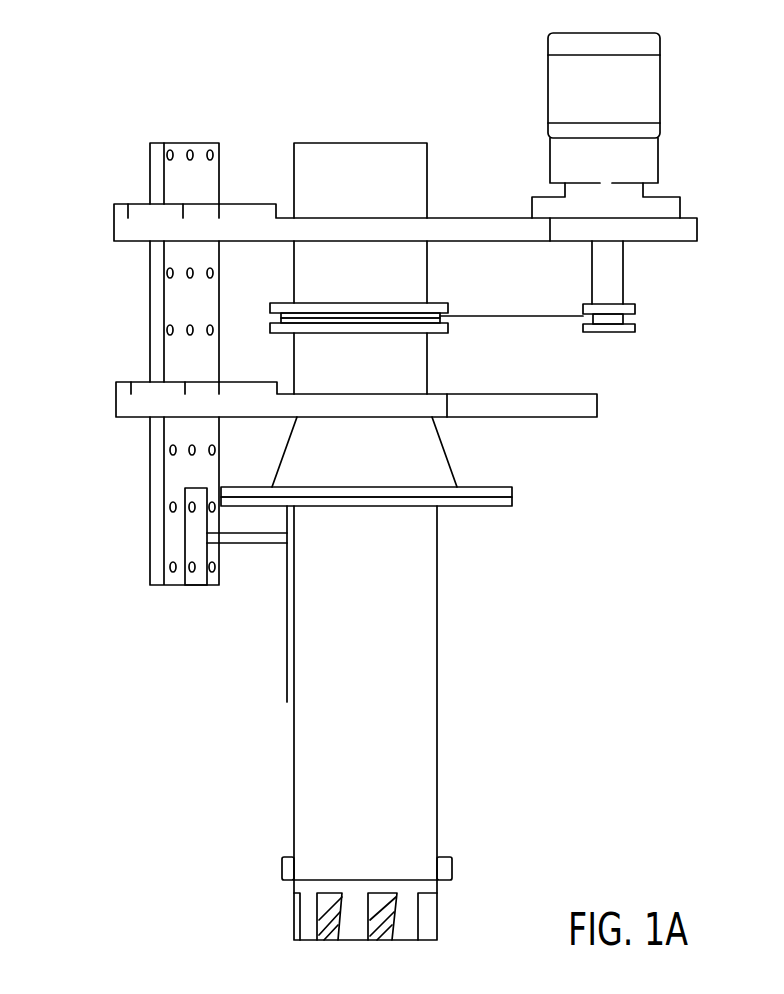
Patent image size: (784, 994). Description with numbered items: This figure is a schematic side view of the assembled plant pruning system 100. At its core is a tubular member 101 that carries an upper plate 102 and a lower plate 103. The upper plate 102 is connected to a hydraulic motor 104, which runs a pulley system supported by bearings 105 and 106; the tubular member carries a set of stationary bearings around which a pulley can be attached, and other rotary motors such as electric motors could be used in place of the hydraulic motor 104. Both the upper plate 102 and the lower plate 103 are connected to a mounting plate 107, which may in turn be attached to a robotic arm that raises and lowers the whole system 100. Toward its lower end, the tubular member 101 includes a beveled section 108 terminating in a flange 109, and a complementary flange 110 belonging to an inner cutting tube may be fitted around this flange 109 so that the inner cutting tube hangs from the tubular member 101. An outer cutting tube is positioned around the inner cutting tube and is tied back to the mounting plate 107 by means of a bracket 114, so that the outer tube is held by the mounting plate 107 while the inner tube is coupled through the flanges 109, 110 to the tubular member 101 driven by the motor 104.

The assembled system 100 is at (233, 113).
The tubular member 101 is at (427, 148).
The upper plate 102 is at (447, 216).
The lower plate 103 is at (530, 418).
The hydraulic motor 104 is at (663, 110).
The bearing 105 is at (443, 335).
The bearing 106 is at (635, 310).
The mounting plate 107 is at (180, 302).
The beveled section 108 is at (415, 460).
The flange 109 is at (490, 482).
The complementary flange 110 is at (258, 507).
The bracket 114 is at (187, 552).